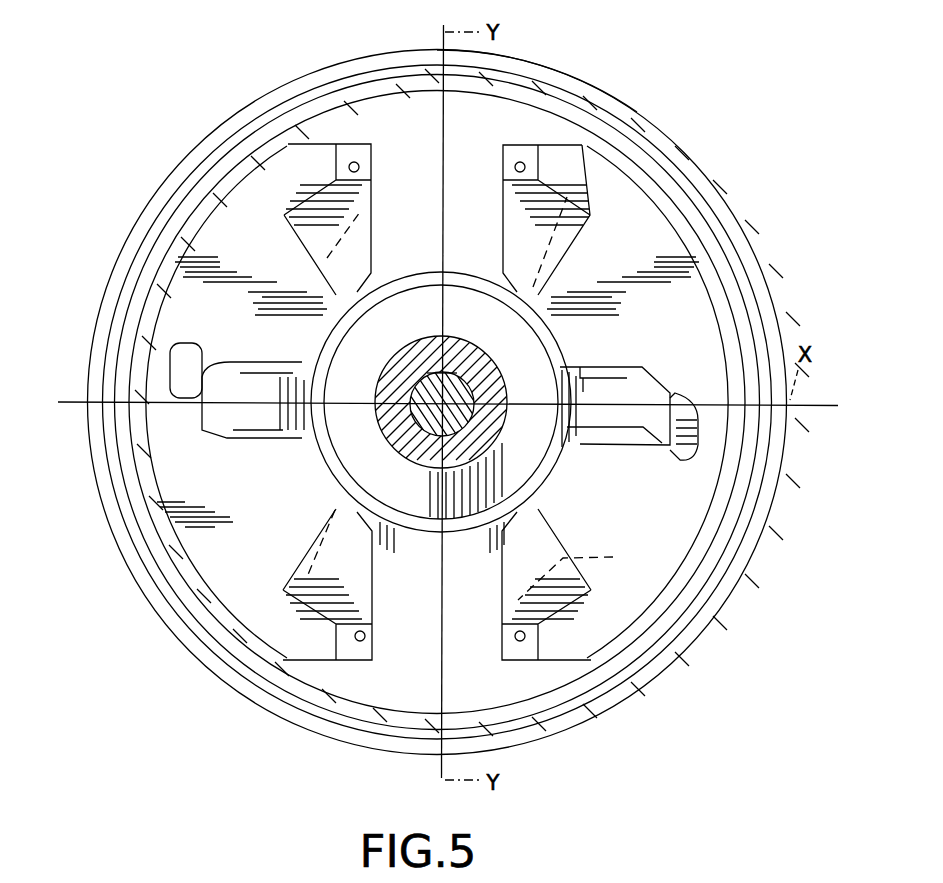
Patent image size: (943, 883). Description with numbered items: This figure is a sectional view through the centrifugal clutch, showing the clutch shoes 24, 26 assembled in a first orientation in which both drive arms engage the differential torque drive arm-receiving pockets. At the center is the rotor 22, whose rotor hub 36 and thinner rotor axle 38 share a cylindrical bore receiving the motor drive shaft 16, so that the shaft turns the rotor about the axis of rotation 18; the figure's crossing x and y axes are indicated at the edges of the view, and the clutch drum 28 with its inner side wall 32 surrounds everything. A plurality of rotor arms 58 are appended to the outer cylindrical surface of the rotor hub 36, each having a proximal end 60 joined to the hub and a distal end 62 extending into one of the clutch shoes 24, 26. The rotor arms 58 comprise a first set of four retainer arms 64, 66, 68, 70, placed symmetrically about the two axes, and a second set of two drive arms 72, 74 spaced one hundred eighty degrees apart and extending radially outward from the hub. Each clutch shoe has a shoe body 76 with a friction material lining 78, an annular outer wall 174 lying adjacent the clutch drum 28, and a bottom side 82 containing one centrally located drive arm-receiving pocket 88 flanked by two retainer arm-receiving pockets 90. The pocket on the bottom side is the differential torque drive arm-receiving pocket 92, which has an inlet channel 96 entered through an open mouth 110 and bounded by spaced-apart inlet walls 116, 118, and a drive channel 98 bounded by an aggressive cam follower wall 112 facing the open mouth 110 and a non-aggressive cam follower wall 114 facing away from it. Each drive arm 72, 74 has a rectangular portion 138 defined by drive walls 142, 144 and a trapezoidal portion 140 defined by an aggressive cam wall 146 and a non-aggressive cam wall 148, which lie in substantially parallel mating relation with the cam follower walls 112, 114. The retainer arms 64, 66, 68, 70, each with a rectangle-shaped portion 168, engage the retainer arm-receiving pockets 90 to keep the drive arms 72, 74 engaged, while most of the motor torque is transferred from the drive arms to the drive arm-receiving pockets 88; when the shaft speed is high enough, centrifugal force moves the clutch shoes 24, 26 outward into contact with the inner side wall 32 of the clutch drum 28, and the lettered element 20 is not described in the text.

The motor drive shaft 16 is at (481, 385).
The axis of rotation 18 is at (478, 410).
The motor housing 20 is at (713, 622).
The rotor 22 is at (422, 252).
The clutch shoe 24 is at (642, 228).
The clutch shoe 26 is at (193, 282).
The clutch drum 28 is at (735, 275).
The inner side wall 32 is at (645, 160).
The rotor hub 36 is at (452, 540).
The rotor axle 38 is at (400, 443).
The rotor arm 58 is at (389, 282).
The proximal end 60 is at (567, 430).
The distal end 62 is at (675, 398).
The retainer arm 64 is at (373, 268).
The retainer arm 66 is at (377, 533).
The retainer arm 68 is at (571, 584).
The retainer arm 70 is at (497, 260).
The drive arm 72 is at (481, 468).
The drive arm 74 is at (639, 380).
The shoe body 76 is at (265, 172).
The friction material lining 78 is at (253, 688).
The bottom side 82 is at (717, 433).
The drive arm-receiving pocket 88 is at (170, 340).
The retainer arm-receiving pocket 90 is at (293, 237).
The differential torque drive arm-receiving pocket 92 is at (183, 405).
The inlet channel 96 is at (302, 338).
The drive channel 98 is at (180, 372).
The open mouth 110 is at (302, 372).
The aggressive cam follower wall 112 is at (665, 388).
The non-aggressive cam follower wall 114 is at (200, 317).
The inlet wall 116 is at (560, 378).
The inlet wall 118 is at (175, 395).
The rectangular portion 138 is at (243, 380).
The trapezoidal portion 140 is at (177, 355).
The drive wall 142 is at (623, 366).
The drive wall 144 is at (627, 432).
The aggressive cam wall 146 is at (213, 425).
The non-aggressive cam wall 148 is at (207, 376).
The rectangle-shaped portion 168 is at (370, 612).
The annular outer wall 174 is at (618, 660).